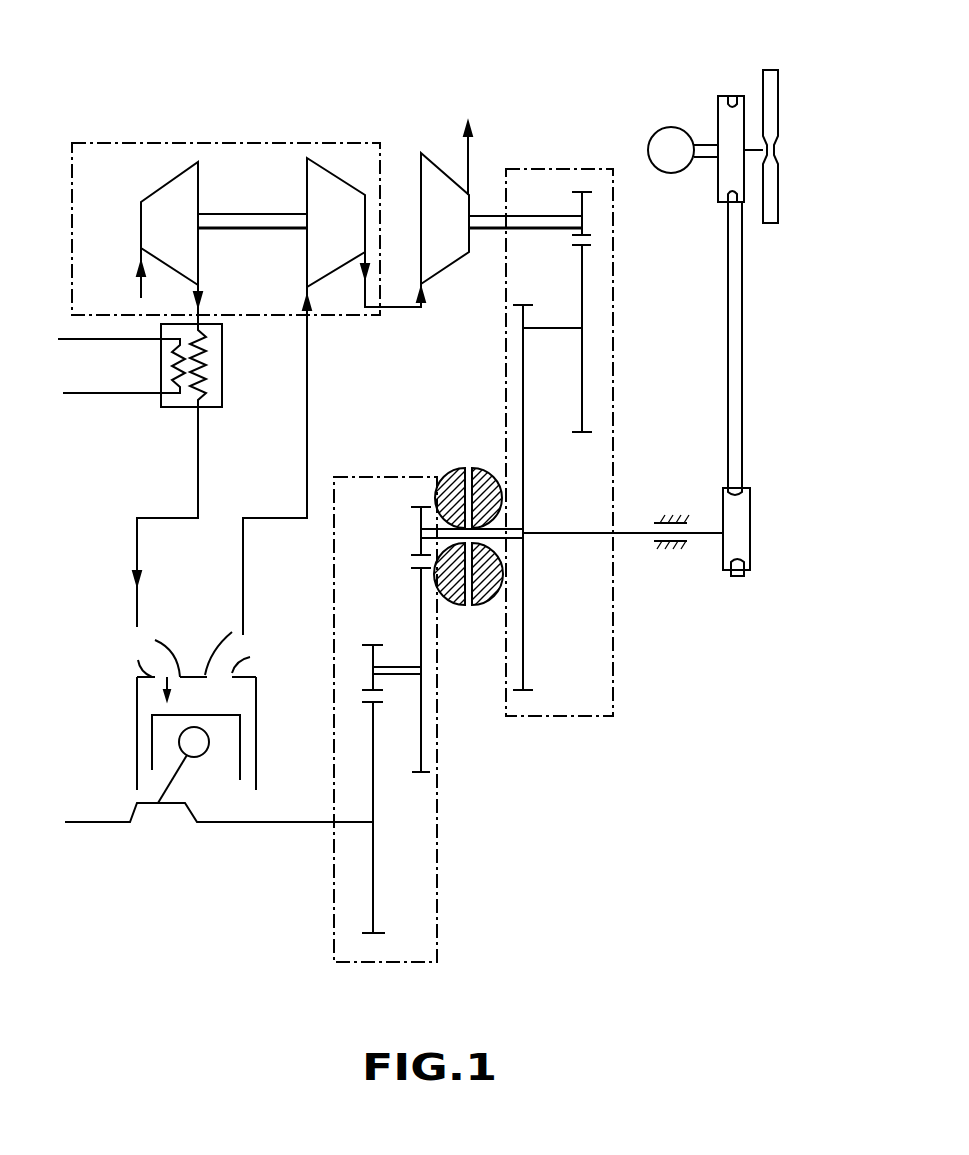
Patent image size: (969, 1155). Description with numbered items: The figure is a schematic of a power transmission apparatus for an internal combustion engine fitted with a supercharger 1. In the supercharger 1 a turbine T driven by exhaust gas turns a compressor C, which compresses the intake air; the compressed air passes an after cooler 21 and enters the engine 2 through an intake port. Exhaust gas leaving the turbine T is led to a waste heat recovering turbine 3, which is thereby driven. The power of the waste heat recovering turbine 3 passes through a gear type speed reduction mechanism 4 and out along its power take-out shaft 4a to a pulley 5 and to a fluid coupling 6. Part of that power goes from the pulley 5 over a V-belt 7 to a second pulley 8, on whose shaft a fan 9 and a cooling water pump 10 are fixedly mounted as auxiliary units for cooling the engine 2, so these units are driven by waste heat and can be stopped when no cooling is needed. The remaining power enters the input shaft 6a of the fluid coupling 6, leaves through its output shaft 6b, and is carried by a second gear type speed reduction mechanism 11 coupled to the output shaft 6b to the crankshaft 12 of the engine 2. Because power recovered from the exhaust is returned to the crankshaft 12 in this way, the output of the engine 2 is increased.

The supercharger 1 is at (238, 143).
The engine 2 is at (137, 703).
The waste heat recovering turbine 3 is at (429, 157).
The gear type speed reduction mechanism 4 is at (534, 174).
The power take-out shaft 4a is at (582, 535).
The pulley 5 is at (750, 512).
The fluid coupling 6 is at (483, 468).
The input shaft 6a is at (517, 545).
The output shaft 6b is at (445, 535).
The V-belt 7 is at (740, 352).
The pulley 8 is at (728, 95).
The fan 9 is at (771, 96).
The cooling water pump 10 is at (663, 135).
The gear type speed reduction mechanism 11 is at (430, 883).
The crankshaft 12 is at (273, 823).
The after cooler 21 is at (160, 397).